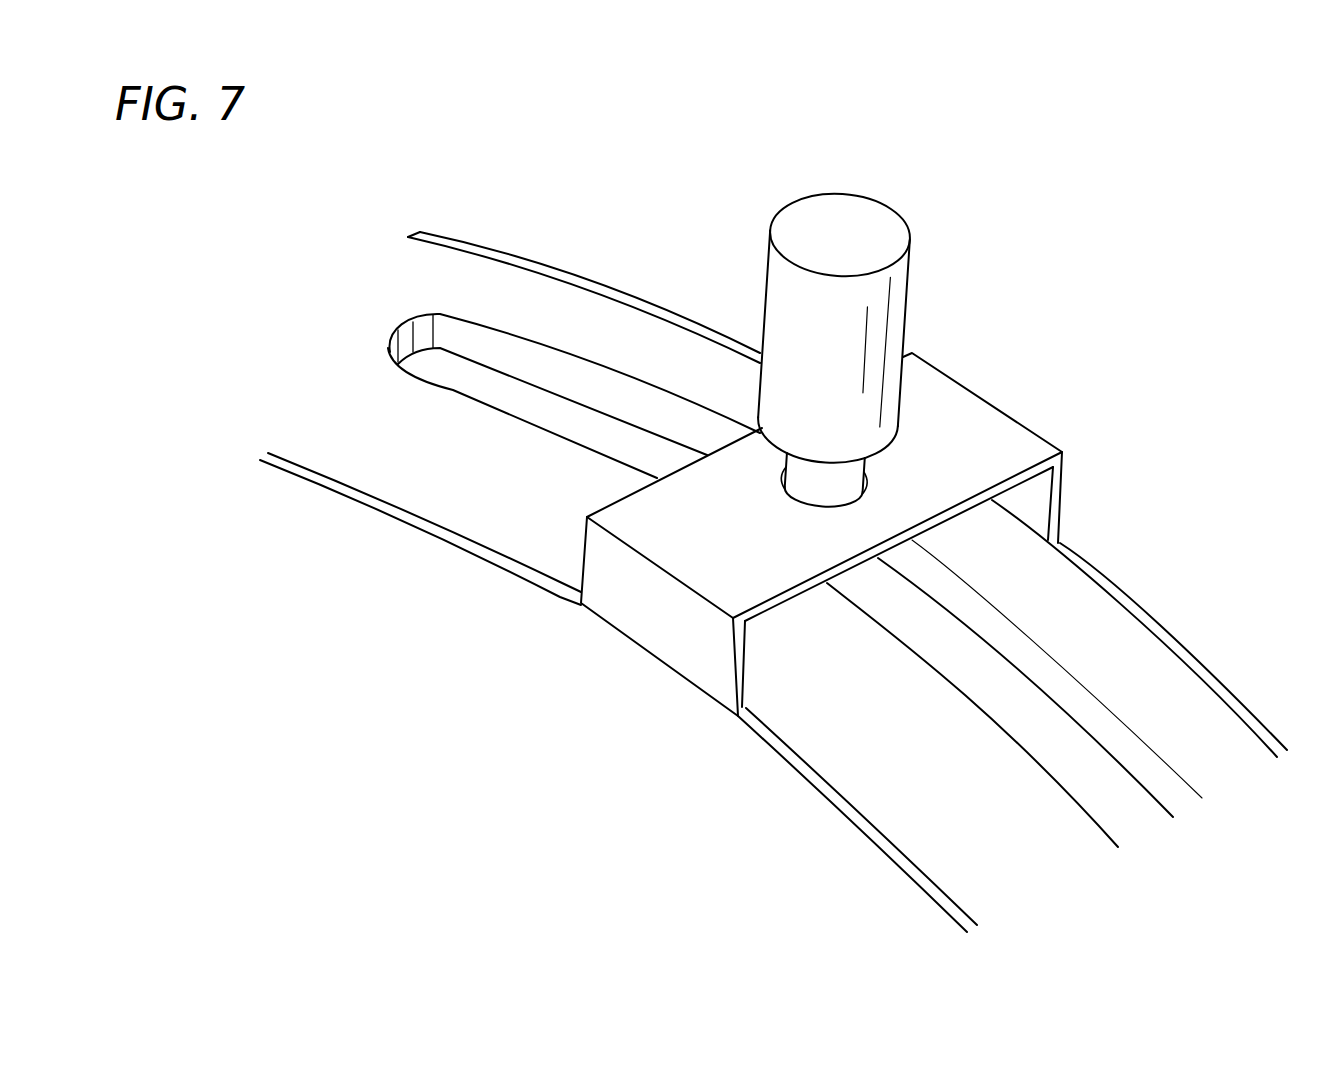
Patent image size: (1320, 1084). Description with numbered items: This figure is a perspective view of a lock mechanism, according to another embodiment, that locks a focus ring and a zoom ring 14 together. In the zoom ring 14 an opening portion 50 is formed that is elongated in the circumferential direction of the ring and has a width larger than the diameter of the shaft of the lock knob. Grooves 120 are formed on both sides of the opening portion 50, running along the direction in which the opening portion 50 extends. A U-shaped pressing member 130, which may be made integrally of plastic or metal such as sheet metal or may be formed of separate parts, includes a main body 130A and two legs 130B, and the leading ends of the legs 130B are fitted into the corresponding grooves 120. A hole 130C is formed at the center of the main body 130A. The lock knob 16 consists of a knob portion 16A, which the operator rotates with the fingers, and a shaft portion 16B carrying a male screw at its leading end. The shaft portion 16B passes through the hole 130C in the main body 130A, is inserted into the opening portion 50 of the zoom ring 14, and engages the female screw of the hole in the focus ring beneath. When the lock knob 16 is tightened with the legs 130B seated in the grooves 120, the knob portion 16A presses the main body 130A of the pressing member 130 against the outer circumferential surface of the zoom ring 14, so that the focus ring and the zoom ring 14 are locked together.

The zoom ring 14 is at (578, 655).
The lock knob 16 is at (849, 353).
The knob portion 16A is at (893, 313).
The shaft portion 16B is at (855, 473).
The opening portion 50 is at (575, 412).
The grooves 120 is at (871, 816).
The pressing member 130 is at (846, 529).
The main body 130A is at (635, 517).
The legs 130B is at (681, 630).
The hole 130C is at (820, 491).